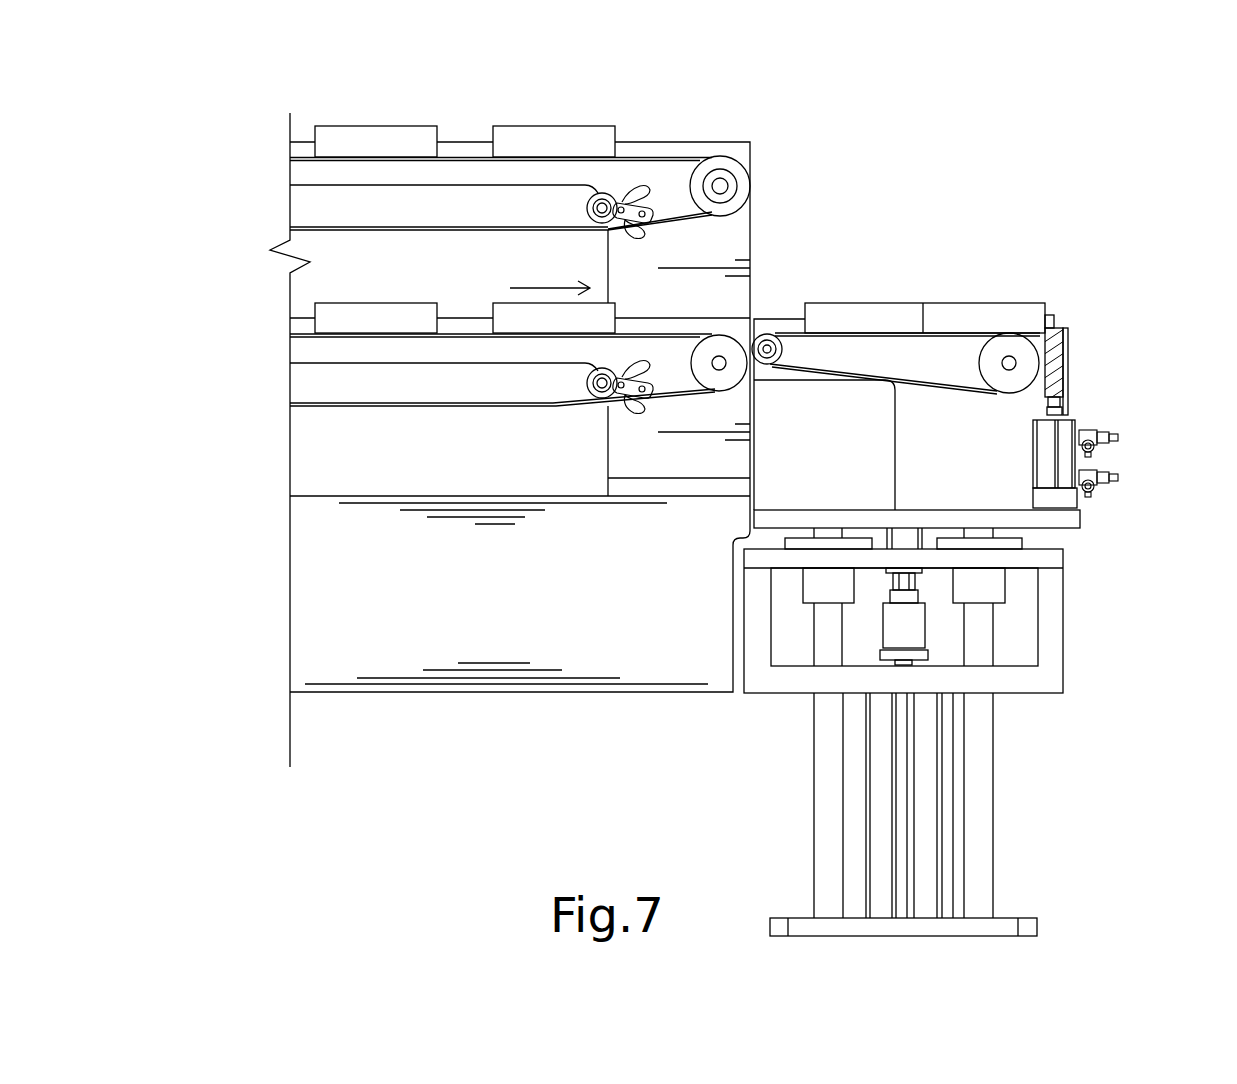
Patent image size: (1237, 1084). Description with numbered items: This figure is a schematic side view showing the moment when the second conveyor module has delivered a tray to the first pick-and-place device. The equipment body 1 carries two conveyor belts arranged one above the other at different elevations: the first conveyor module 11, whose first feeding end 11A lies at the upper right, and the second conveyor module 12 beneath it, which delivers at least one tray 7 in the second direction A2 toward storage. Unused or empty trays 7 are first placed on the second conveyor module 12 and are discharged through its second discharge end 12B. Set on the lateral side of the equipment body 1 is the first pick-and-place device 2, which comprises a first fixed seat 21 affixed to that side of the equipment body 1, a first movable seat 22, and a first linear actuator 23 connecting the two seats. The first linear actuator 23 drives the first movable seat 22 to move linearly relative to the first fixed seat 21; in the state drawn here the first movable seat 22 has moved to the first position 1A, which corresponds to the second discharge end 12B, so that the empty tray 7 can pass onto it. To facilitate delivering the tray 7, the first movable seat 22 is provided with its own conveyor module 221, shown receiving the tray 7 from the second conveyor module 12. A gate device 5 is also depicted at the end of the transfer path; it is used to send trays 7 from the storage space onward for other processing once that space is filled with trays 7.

The equipment body 1 is at (507, 692).
The first position 1A is at (1050, 285).
The first pick-and-place device 2 is at (1108, 730).
The gate device 5 is at (1055, 372).
The tray 7 is at (340, 141).
The first conveyor module 11 is at (460, 150).
The first feeding end 11A is at (748, 157).
The second conveyor module 12 is at (320, 408).
The second discharge end 12B is at (744, 395).
The first fixed seat 21 is at (1048, 670).
The first movable seat 22 is at (1048, 518).
The conveyor module 221 is at (968, 387).
The first linear actuator 23 is at (977, 863).
The second direction A2 is at (538, 288).